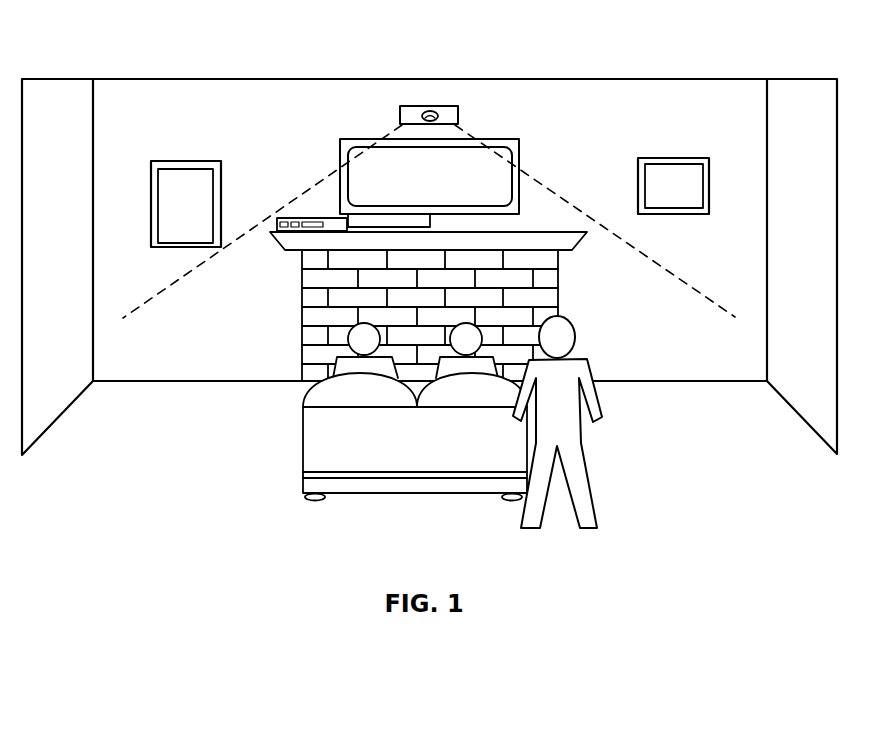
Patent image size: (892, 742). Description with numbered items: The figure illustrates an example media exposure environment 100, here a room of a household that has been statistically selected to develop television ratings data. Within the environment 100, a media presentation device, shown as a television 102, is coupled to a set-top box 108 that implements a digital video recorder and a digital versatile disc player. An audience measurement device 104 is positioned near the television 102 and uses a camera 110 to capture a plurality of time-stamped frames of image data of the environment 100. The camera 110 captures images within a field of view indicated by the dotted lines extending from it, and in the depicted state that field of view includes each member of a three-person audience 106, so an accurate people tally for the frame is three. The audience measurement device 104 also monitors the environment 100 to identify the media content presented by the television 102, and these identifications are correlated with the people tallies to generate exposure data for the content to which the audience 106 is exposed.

The media exposure environment 100 is at (118, 67).
The media presentation device 102 is at (415, 184).
The audience measurement device 104 is at (429, 181).
The audience 106 is at (641, 449).
The set-top box 108 is at (297, 217).
The camera 110 is at (430, 109).